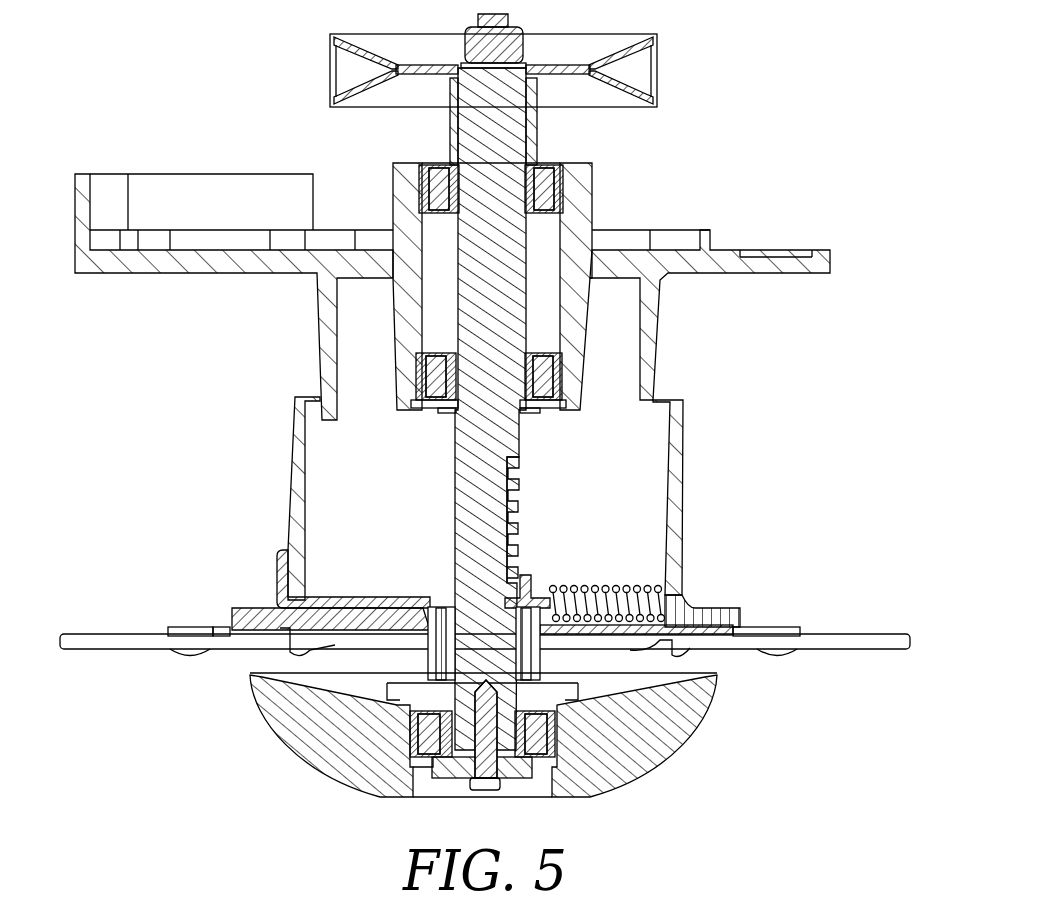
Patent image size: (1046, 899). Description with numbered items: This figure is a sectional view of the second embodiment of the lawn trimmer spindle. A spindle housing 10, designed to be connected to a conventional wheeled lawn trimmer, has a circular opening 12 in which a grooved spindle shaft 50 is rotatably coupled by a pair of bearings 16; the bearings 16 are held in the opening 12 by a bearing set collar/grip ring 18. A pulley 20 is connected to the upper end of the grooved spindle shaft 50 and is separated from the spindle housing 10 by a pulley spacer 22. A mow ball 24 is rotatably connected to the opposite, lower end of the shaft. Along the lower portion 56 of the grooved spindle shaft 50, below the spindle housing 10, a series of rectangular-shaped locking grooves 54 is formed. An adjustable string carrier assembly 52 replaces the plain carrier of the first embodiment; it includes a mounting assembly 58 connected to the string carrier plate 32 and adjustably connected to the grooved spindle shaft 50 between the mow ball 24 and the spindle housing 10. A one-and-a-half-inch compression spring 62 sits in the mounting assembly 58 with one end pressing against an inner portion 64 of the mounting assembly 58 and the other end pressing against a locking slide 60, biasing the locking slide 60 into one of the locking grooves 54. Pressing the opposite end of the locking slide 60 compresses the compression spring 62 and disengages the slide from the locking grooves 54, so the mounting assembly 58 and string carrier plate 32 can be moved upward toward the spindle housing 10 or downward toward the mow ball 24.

The spindle housing 10 is at (830, 248).
The circular opening 12 is at (555, 162).
The bearings 16 is at (565, 186).
The bearing set collar/grip ring 18 is at (440, 407).
The pulley 20 is at (657, 38).
The pulley spacer 22 is at (450, 127).
The mow ball 24 is at (715, 688).
The string carrier plate 32 is at (793, 630).
The grooved spindle shaft 50 is at (518, 444).
The adjustable string carrier assembly 52 is at (544, 512).
The locking grooves 54 is at (542, 517).
The lower portion 56 is at (455, 512).
The mounting assembly 58 is at (683, 582).
The locking slide 60 is at (277, 565).
The compression spring 62 is at (605, 583).
The inner portion 64 is at (650, 600).